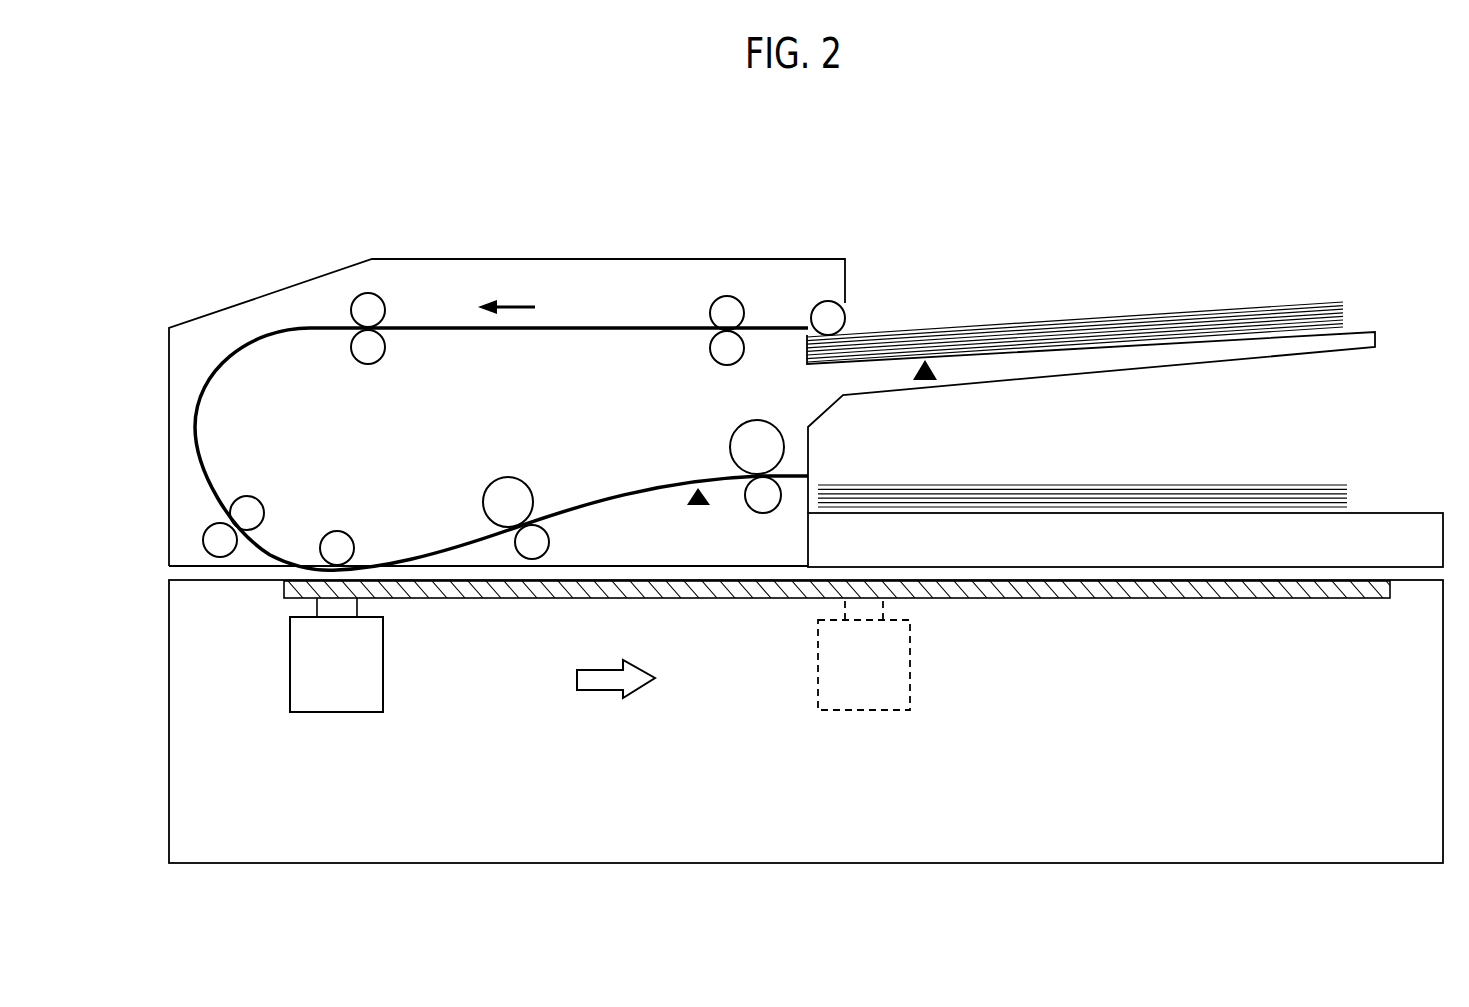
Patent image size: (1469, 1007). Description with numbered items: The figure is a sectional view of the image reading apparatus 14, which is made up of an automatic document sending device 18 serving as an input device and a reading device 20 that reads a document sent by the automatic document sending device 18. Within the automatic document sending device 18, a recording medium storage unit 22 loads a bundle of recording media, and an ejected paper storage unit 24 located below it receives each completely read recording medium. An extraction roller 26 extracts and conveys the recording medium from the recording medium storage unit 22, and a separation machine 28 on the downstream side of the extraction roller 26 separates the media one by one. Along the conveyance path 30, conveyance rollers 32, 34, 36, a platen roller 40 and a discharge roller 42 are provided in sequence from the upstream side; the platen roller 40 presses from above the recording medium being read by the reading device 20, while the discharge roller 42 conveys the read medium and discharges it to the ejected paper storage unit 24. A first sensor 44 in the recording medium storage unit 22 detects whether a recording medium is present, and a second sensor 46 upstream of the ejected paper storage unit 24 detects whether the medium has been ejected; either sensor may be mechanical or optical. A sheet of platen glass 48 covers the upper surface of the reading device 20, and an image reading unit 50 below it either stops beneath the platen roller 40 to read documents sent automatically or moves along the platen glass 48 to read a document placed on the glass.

The image reading apparatus 14 is at (1290, 246).
The automatic document sending device 18 is at (166, 452).
The reading device 20 is at (166, 675).
The recording medium storage unit 22 is at (1188, 363).
The ejected paper storage unit 24 is at (1407, 510).
The extraction roller 26 is at (845, 320).
The separation machine 28 is at (723, 300).
The conveyance path 30 is at (617, 327).
The conveyance roller 32 is at (365, 305).
The conveyance roller 34 is at (253, 502).
The conveyance roller 36 is at (488, 490).
The platen roller 40 is at (335, 540).
The discharge roller 42 is at (775, 503).
The first sensor 44 is at (932, 362).
The second sensor 46 is at (690, 500).
The platen glass 48 is at (1040, 600).
The image reading unit 50 is at (383, 677).